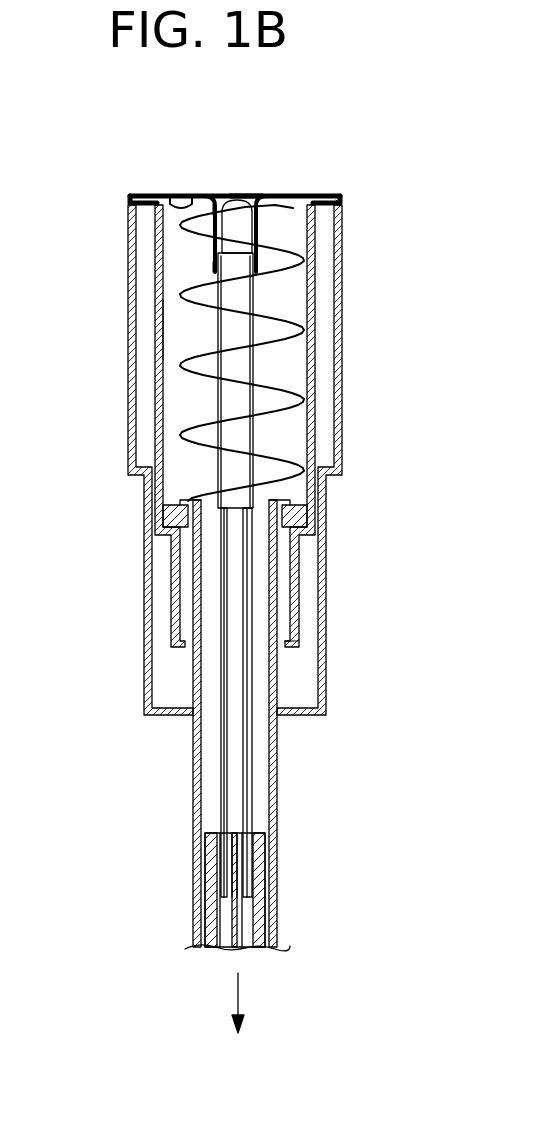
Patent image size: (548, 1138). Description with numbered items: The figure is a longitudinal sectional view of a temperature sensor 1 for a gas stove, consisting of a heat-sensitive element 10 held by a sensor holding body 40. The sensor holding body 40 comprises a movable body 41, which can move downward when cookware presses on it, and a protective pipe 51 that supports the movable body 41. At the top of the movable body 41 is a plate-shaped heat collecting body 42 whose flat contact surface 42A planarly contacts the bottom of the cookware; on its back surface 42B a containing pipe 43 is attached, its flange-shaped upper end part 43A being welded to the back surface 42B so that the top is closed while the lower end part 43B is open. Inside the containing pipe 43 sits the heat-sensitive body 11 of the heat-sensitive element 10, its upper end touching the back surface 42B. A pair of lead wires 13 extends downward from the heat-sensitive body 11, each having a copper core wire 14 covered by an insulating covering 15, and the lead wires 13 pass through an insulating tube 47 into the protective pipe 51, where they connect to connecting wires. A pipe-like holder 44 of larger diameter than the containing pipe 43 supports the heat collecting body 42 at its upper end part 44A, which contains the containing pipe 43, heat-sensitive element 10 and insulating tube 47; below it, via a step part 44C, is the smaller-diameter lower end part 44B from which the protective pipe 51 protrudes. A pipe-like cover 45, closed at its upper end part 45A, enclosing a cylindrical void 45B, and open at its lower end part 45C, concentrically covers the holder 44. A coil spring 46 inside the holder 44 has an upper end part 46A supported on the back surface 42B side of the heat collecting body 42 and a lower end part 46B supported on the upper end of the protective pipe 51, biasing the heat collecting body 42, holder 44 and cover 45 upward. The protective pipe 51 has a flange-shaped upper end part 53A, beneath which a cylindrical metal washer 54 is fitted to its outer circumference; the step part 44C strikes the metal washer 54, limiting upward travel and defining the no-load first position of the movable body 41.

The temperature sensor 1 is at (351, 176).
The heat-sensitive element 10 is at (262, 228).
The heat-sensitive body 11 is at (247, 195).
The lead wire 13 is at (250, 593).
The core wire 14 is at (266, 936).
The insulating covering 15 is at (278, 824).
The sensor holding body 40 is at (226, 578).
The movable body 41 is at (131, 353).
The heat collecting body 42 is at (345, 197).
The contact surface 42A is at (148, 198).
The back surface 42B is at (183, 199).
The containing pipe 43 is at (262, 266).
The upper end part 43A is at (211, 208).
The lower end part 43B is at (213, 268).
The holder 44 is at (300, 601).
The upper end part 44A is at (325, 197).
The lower end part 44B is at (303, 639).
The step part 44C is at (303, 531).
The cover 45 is at (342, 372).
The upper end part 45A is at (345, 205).
The cylindrical void 45B is at (410, 326).
The lower end part 45C is at (325, 734).
The coil spring 46 is at (280, 381).
The upper end part 46A is at (292, 205).
The lower end part 46B is at (192, 499).
The insulating tube 47 is at (256, 433).
The protective pipe 51 is at (194, 922).
The upper end part 53A is at (306, 498).
The metal washer 54 is at (312, 523).